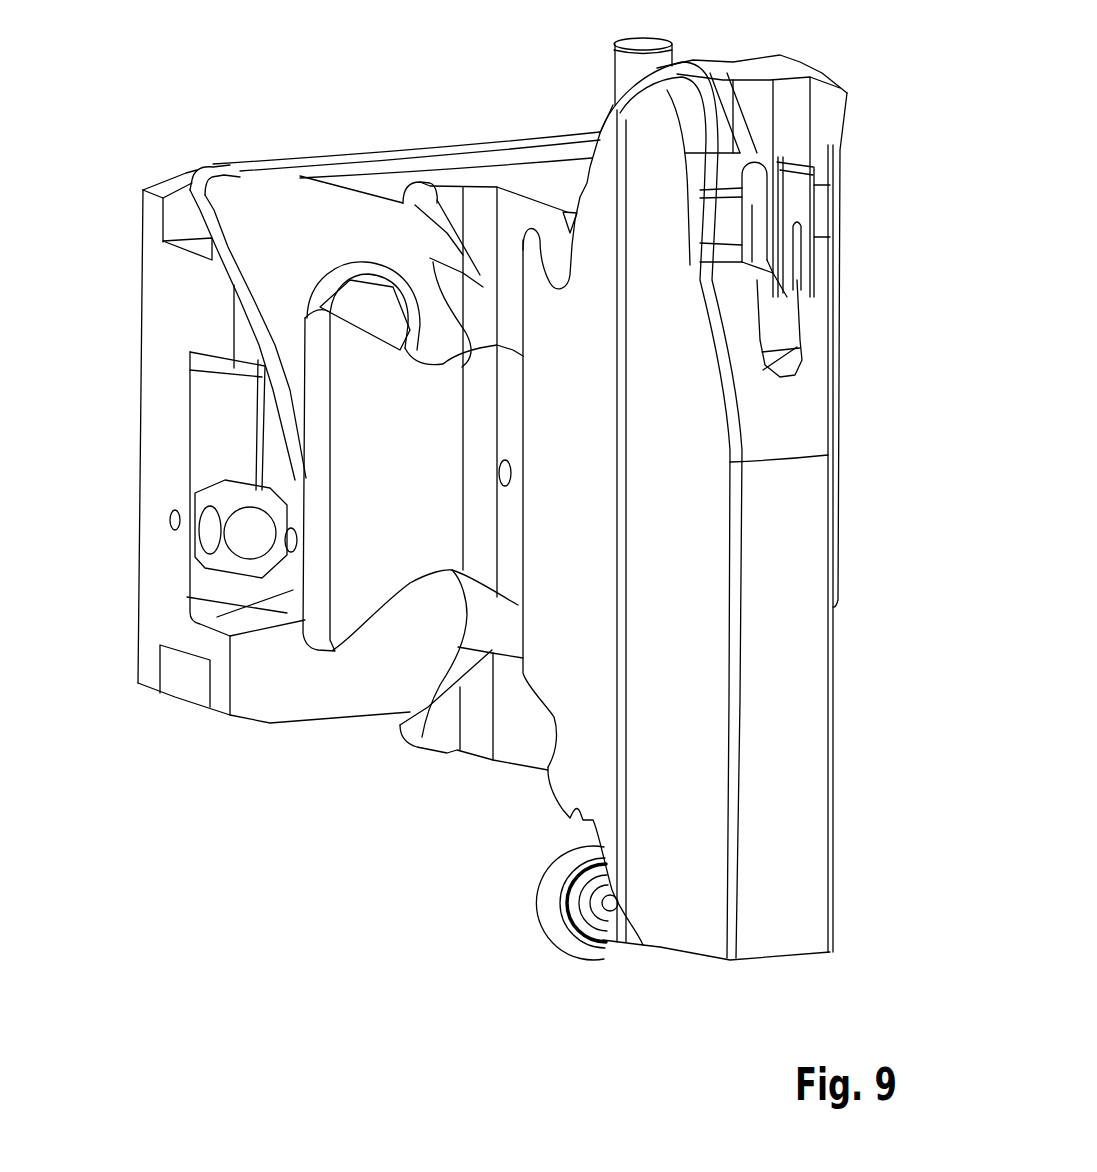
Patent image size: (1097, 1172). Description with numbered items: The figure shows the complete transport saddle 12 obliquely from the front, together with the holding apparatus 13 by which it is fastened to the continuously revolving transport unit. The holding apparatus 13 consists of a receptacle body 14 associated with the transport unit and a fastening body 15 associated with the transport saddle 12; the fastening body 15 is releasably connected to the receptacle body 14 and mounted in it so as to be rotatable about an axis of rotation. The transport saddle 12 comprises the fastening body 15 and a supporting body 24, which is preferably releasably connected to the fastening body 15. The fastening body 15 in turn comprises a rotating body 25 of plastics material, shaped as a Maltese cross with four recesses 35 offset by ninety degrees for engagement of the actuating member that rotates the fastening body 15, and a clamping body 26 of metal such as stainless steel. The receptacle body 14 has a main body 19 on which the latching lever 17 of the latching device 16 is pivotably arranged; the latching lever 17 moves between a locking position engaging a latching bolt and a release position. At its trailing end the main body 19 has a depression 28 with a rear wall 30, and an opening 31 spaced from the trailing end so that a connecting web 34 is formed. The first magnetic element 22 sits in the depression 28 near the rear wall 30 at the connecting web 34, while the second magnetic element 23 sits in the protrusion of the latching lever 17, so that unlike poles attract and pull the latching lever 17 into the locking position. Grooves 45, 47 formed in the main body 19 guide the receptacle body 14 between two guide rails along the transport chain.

The transport saddle 12 is at (856, 45).
The holding apparatus 13 is at (328, 768).
The receptacle body 14 is at (140, 735).
The fastening body 15 is at (515, 805).
The latching device 16 is at (359, 222).
The latching lever 17 is at (255, 187).
The main body 19 is at (262, 697).
The first magnetic element 22 is at (207, 533).
The second magnetic element 23 is at (273, 492).
The supporting body 24 is at (808, 719).
The rotating body 25 is at (367, 582).
The clamping body 26 is at (786, 316).
The depression 28 is at (190, 391).
The rear wall 30 is at (242, 447).
The opening 31 is at (270, 456).
The connecting web 34 is at (183, 438).
The recess 35 is at (440, 280).
The groove 45 is at (178, 670).
The groove 47 is at (182, 220).